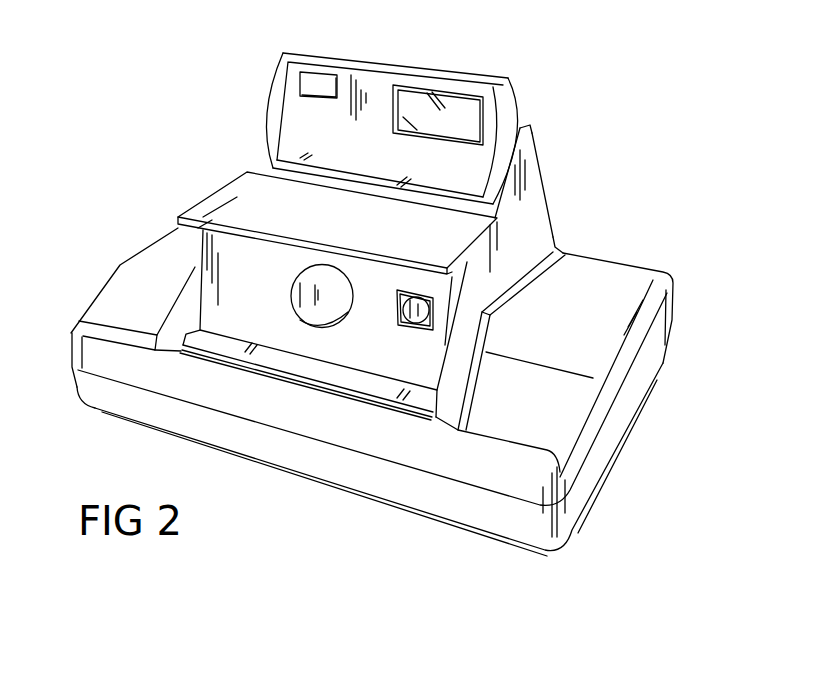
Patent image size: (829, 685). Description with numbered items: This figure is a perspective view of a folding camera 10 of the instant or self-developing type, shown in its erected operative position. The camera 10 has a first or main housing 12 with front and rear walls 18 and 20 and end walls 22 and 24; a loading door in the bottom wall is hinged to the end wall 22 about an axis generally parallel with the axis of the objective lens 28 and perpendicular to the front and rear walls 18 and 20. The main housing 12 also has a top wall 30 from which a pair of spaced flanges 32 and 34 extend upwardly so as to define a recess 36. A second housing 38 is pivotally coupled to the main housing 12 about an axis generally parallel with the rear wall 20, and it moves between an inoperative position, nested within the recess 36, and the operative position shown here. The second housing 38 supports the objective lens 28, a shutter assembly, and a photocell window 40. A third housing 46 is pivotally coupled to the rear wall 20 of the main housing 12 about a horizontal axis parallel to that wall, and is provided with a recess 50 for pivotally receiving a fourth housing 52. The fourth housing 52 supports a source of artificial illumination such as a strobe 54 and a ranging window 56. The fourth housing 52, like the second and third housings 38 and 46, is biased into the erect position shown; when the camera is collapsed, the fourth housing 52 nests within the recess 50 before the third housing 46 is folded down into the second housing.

The folding camera 10 is at (631, 184).
The main housing 12 is at (603, 448).
The front wall 18 is at (261, 447).
The rear wall 20 is at (672, 340).
The end wall 22 is at (76, 388).
The end wall 24 is at (633, 397).
The objective lens 28 is at (305, 297).
The top wall 30 is at (614, 278).
The flange 32 is at (178, 303).
The flange 34 is at (452, 396).
The recess 36 is at (294, 360).
The second housing 38 is at (540, 243).
The photocell window 40 is at (421, 322).
The third housing 46 is at (540, 166).
The recess 50 is at (519, 130).
The fourth housing 52 is at (400, 118).
The strobe 54 is at (430, 132).
The ranging window 56 is at (318, 92).